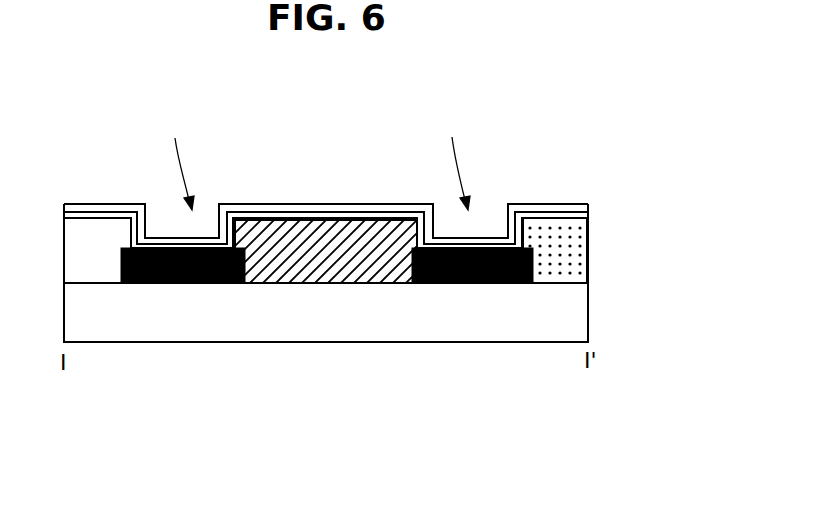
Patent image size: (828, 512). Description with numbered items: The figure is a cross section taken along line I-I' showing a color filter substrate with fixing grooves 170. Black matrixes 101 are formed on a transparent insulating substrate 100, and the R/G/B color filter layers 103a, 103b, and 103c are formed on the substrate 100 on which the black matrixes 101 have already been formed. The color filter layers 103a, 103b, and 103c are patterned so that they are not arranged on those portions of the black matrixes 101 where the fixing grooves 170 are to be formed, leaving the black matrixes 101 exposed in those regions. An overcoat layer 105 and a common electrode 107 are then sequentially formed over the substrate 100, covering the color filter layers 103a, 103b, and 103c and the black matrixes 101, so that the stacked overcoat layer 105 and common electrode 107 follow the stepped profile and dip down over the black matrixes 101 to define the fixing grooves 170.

The transparent insulating substrate 100 is at (585, 312).
The black matrixes 101 is at (178, 283).
The R color filter layer 103a is at (103, 227).
The G color filter layer 103b is at (320, 223).
The B color filter layer 103c is at (542, 222).
The overcoat layer 105 is at (588, 215).
The common electrode 107 is at (550, 204).
The fixing grooves 170 is at (315, 160).